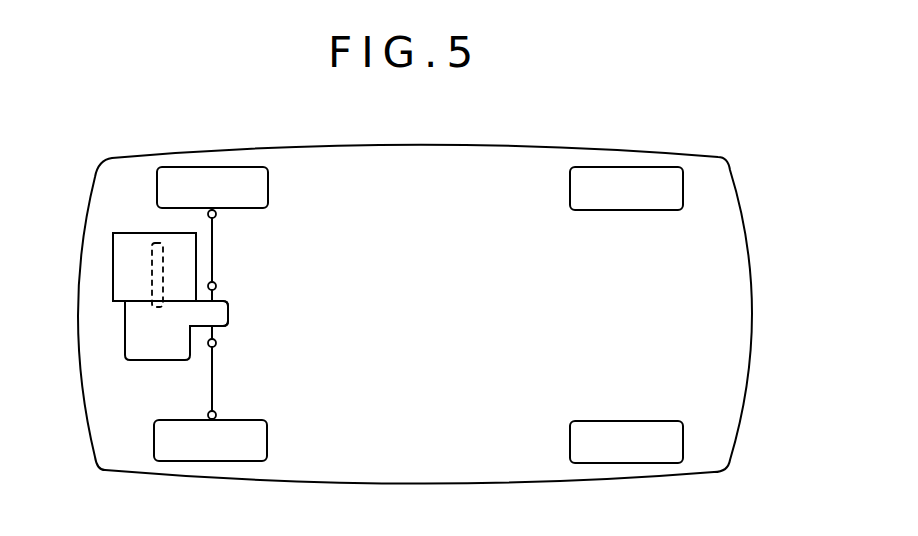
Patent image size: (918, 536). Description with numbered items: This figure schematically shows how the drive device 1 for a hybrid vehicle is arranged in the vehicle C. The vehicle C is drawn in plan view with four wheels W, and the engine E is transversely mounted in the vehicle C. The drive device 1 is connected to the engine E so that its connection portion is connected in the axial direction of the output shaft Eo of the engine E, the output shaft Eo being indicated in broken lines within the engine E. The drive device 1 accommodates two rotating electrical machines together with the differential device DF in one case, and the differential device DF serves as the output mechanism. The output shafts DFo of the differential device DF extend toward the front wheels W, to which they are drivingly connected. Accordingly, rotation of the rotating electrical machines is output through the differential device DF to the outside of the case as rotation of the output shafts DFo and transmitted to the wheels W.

The vehicle C is at (122, 152).
The wheels W is at (233, 178).
The engine E is at (118, 289).
The output shaft of the engine Eo is at (152, 261).
The drive device 1 is at (144, 327).
The differential device DF is at (229, 313).
The output shafts of the differential device DFo is at (219, 295).